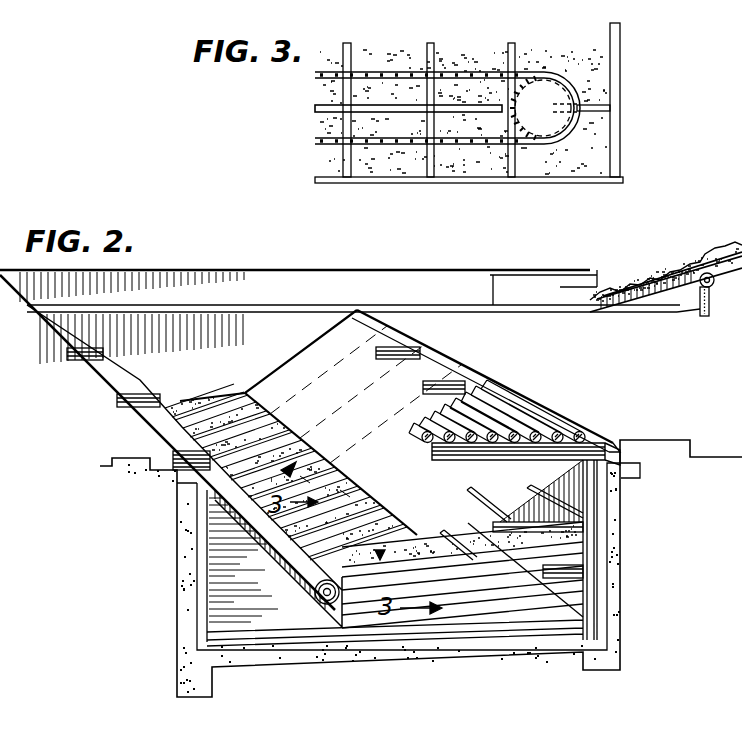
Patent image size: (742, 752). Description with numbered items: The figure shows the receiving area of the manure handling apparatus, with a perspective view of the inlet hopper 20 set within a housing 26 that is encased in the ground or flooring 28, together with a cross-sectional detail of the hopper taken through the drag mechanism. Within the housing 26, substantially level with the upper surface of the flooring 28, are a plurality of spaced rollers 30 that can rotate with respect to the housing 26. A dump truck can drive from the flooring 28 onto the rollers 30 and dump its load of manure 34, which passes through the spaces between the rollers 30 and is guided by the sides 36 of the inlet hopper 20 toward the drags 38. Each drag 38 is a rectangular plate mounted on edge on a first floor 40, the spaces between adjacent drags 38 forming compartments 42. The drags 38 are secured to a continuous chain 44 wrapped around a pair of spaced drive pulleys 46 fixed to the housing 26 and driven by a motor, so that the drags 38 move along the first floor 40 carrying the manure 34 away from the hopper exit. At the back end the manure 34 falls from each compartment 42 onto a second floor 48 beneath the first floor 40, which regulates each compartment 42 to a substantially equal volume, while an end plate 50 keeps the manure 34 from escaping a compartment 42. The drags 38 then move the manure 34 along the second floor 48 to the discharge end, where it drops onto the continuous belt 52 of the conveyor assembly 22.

In FIG. 2, the inlet hopper 20 is at (570, 419).
In FIG. 2, the conveyor assembly 22 is at (685, 262).
In FIG. 2, the housing 26 is at (543, 605).
In FIG. 2, the flooring 28 is at (522, 355).
In FIG. 2, the rollers 30 is at (513, 410).
In FIG. 3, the manure 34 is at (380, 160).
In FIG. 2, the manure 34 is at (303, 453).
In FIG. 2, the sides 36 is at (338, 394).
In FIG. 3, the drags 38 is at (340, 152).
In FIG. 2, the drags 38 is at (343, 497).
In FIG. 3, the first floor 40 is at (315, 100).
In FIG. 3, the compartments 42 is at (440, 45).
In FIG. 2, the compartments 42 is at (307, 486).
In FIG. 3, the continuous chain 44 is at (525, 140).
In FIG. 3, the drive pulleys 46 is at (605, 135).
In FIG. 3, the second floor 48 is at (468, 182).
In FIG. 3, the end plate 50 is at (621, 80).
In FIG. 2, the end plate 50 is at (483, 603).
In FIG. 2, the continuous belt 52 is at (613, 278).